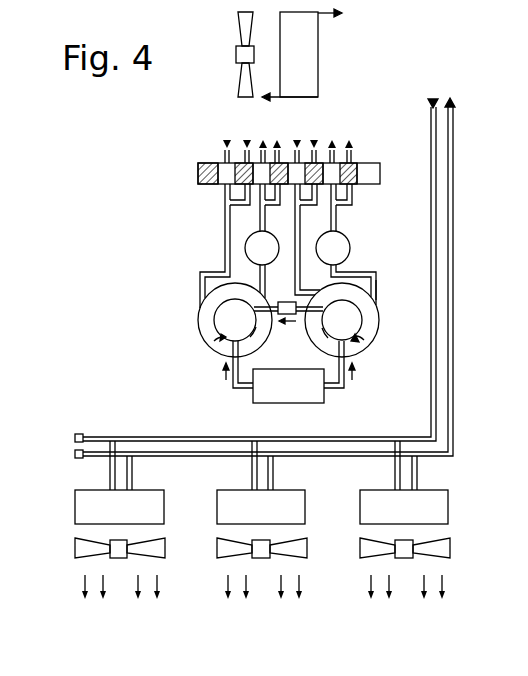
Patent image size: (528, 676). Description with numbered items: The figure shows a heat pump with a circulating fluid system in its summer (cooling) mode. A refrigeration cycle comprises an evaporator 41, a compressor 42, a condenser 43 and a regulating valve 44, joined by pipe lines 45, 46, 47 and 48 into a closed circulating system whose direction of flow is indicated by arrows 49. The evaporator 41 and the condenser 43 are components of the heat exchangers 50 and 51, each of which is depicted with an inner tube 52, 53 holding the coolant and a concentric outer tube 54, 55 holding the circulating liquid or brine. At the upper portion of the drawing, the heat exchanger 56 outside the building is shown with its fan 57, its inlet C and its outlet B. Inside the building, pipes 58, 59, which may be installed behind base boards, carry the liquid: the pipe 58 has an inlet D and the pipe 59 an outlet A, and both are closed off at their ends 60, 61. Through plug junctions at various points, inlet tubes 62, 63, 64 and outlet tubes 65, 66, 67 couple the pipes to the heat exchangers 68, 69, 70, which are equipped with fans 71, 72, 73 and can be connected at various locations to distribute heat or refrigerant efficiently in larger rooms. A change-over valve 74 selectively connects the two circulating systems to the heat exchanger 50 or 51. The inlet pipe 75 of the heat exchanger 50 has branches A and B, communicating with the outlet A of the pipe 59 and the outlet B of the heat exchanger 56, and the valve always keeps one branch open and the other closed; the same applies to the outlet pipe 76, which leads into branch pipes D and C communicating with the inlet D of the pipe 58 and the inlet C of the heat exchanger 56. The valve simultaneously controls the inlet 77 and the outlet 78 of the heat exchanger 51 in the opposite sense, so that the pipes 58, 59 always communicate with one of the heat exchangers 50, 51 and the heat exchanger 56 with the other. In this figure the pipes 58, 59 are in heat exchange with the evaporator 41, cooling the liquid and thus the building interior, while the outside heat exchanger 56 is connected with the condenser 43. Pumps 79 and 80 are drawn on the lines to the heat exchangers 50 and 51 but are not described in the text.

The evaporator 41 is at (223, 347).
The compressor 42 is at (288, 386).
The condenser 43 is at (368, 339).
The regulating valve 44 is at (290, 302).
The pipe line 45 is at (241, 390).
The pipe line 46 is at (342, 390).
The pipe line 47 is at (327, 320).
The pipe line 48 is at (258, 333).
The arrows 49 is at (223, 374).
The heat exchanger 50 is at (206, 332).
The heat exchanger 51 is at (364, 320).
The inner tube 52 is at (208, 338).
The inner tube 53 is at (378, 327).
The concentric outer tube 54 is at (200, 312).
The concentric outer tube 55 is at (375, 282).
The heat exchanger outside the building 56 is at (310, 53).
The fan 57 is at (238, 25).
The pipe 58 is at (436, 177).
The pipe 59 is at (454, 222).
The end 60 is at (81, 432).
The end 61 is at (75, 453).
The inlet tube 62 is at (109, 480).
The inlet tube 63 is at (251, 480).
The inlet tube 64 is at (393, 480).
The outlet tube 65 is at (134, 478).
The outlet tube 66 is at (275, 478).
The outlet tube 67 is at (419, 478).
The heat exchanger 68 is at (119, 507).
The heat exchanger 69 is at (261, 507).
The heat exchanger 70 is at (404, 507).
The fan 71 is at (166, 549).
The fan 72 is at (308, 549).
The fan 73 is at (451, 549).
The change-over valve 74 is at (196, 155).
The inlet pipe 75 is at (225, 207).
The outlet pipe 76 is at (259, 215).
The inlet 77 is at (300, 212).
The outlet 78 is at (335, 222).
The pump 79 is at (245, 249).
The pump 80 is at (351, 250).